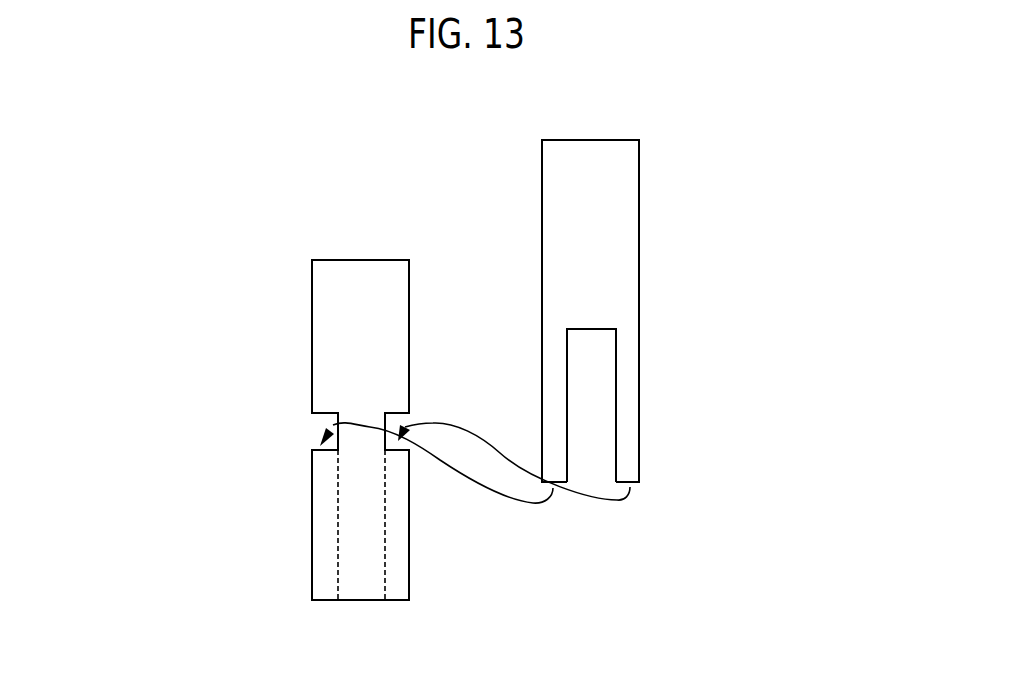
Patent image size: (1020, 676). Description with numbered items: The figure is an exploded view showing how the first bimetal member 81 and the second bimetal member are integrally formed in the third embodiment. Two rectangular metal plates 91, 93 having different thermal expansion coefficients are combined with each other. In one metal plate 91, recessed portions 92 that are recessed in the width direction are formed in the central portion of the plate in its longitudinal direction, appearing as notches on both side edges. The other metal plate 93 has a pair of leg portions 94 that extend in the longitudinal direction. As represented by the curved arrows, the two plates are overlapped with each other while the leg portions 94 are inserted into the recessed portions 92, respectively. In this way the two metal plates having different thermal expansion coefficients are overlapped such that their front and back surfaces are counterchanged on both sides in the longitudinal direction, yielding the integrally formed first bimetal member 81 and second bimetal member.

The first bimetal member 81 is at (278, 191).
The metal plate 91 is at (326, 318).
The recessed portions 92 is at (325, 416).
The metal plate 93 is at (561, 218).
The leg portions 94 is at (554, 393).